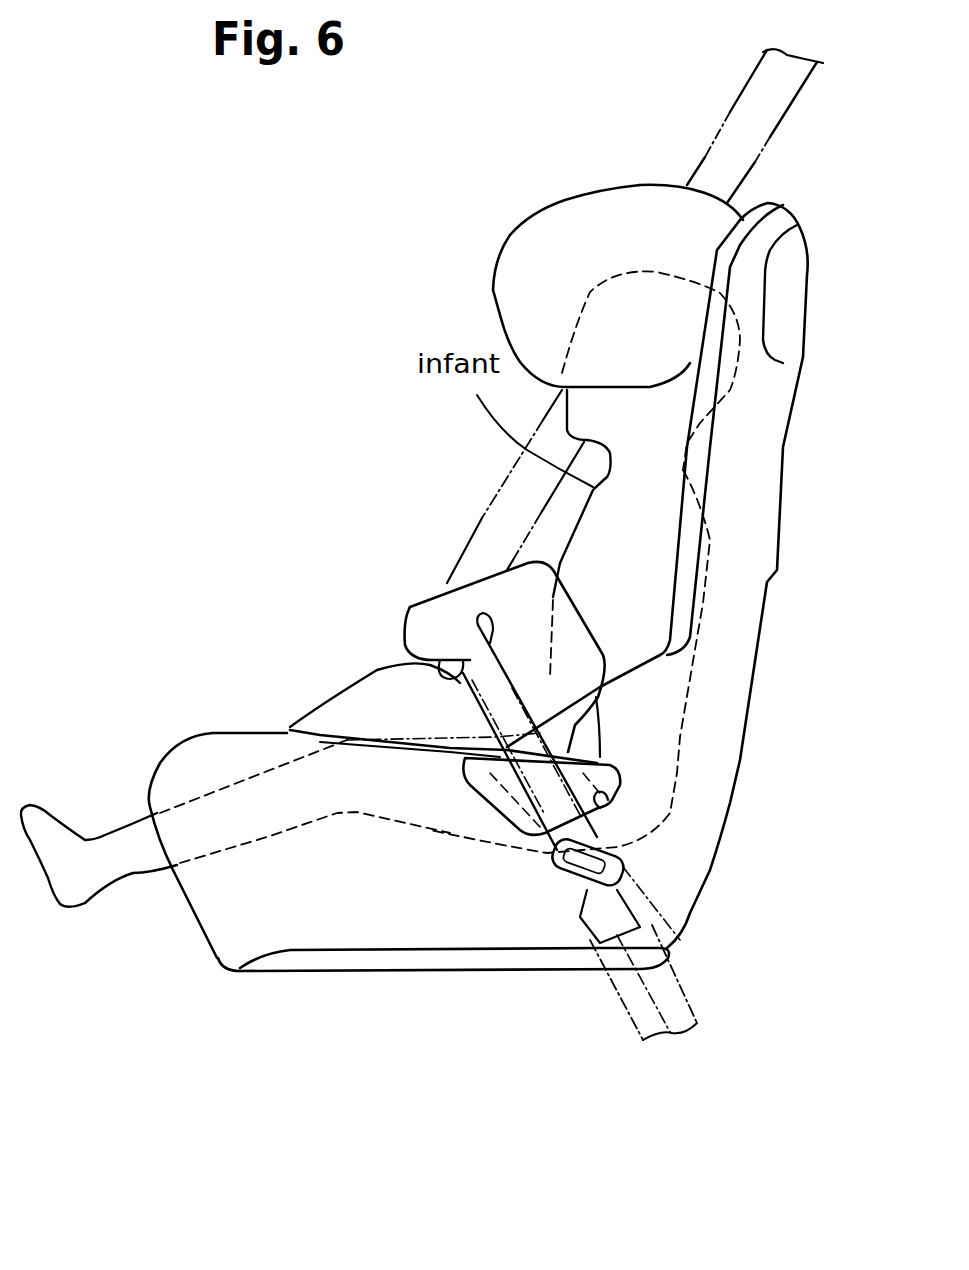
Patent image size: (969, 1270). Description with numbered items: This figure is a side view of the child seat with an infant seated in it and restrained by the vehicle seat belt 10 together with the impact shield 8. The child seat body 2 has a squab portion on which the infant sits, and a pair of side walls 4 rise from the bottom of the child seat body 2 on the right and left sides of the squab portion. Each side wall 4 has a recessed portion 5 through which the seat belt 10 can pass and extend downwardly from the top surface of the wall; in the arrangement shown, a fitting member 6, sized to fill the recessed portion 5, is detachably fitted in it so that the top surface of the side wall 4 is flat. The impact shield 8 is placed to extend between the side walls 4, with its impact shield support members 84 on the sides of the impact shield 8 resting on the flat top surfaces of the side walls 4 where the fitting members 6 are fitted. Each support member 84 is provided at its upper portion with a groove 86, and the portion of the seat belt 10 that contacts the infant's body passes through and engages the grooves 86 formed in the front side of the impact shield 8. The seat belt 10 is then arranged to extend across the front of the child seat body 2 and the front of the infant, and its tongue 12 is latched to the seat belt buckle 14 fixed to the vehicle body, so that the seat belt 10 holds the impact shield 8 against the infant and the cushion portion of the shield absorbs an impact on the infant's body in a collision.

The child seat body 2 is at (790, 402).
The side walls 4 is at (213, 733).
The recessed portions 5 is at (617, 800).
The fitting members 6 is at (610, 757).
The impact shield 8 is at (480, 597).
The seat belt 10 is at (727, 118).
The tongue 12 is at (640, 897).
The seat belt buckle 14 is at (607, 920).
The impact shield support members 84 is at (378, 708).
The groove 86 is at (427, 620).